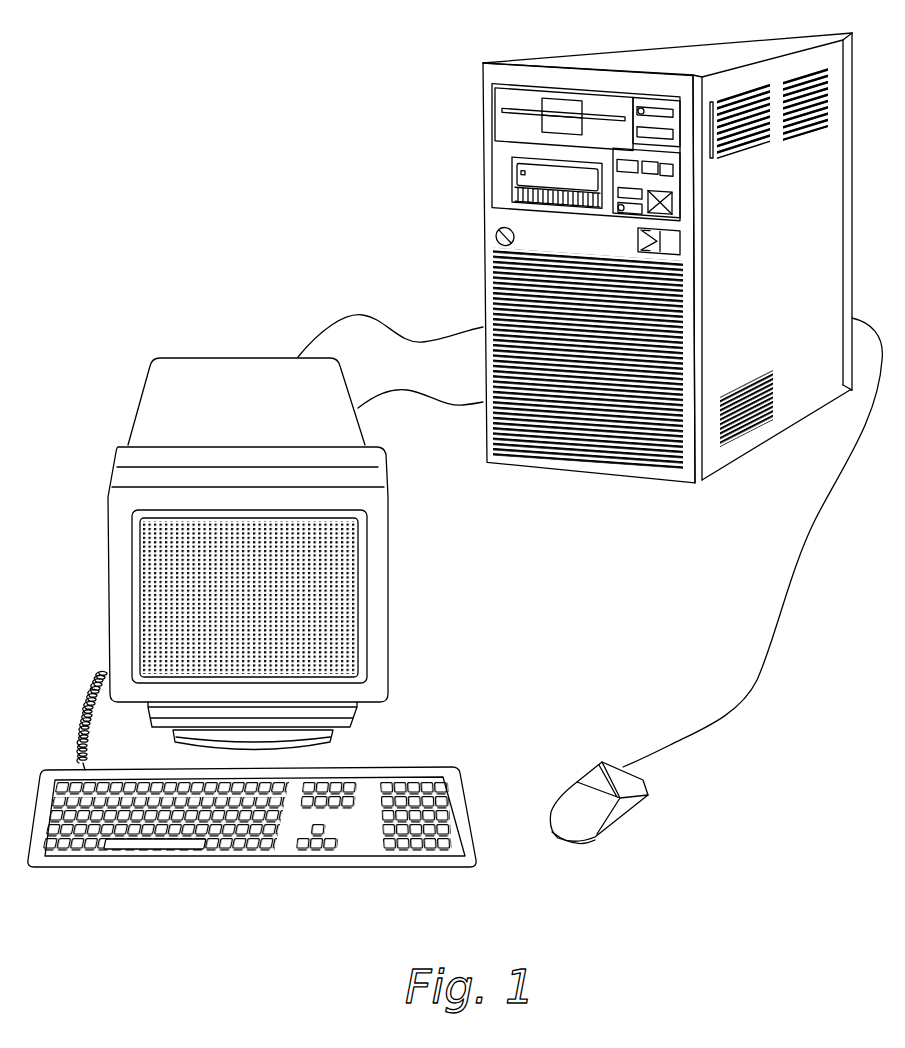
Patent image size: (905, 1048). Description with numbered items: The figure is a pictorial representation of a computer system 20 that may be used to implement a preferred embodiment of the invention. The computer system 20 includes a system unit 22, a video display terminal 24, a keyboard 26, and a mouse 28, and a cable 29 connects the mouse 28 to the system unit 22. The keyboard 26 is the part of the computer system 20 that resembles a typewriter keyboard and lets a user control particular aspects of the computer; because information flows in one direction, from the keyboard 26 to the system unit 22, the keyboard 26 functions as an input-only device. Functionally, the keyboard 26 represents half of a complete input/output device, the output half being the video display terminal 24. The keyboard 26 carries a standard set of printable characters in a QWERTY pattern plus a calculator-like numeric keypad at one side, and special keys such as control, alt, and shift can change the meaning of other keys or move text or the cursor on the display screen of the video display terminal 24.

The computer system 20 is at (276, 231).
The system unit 22 is at (500, 220).
The video display terminal 24 is at (262, 378).
The keyboard 26 is at (287, 853).
The mouse 28 is at (603, 823).
The cable 29 is at (757, 680).